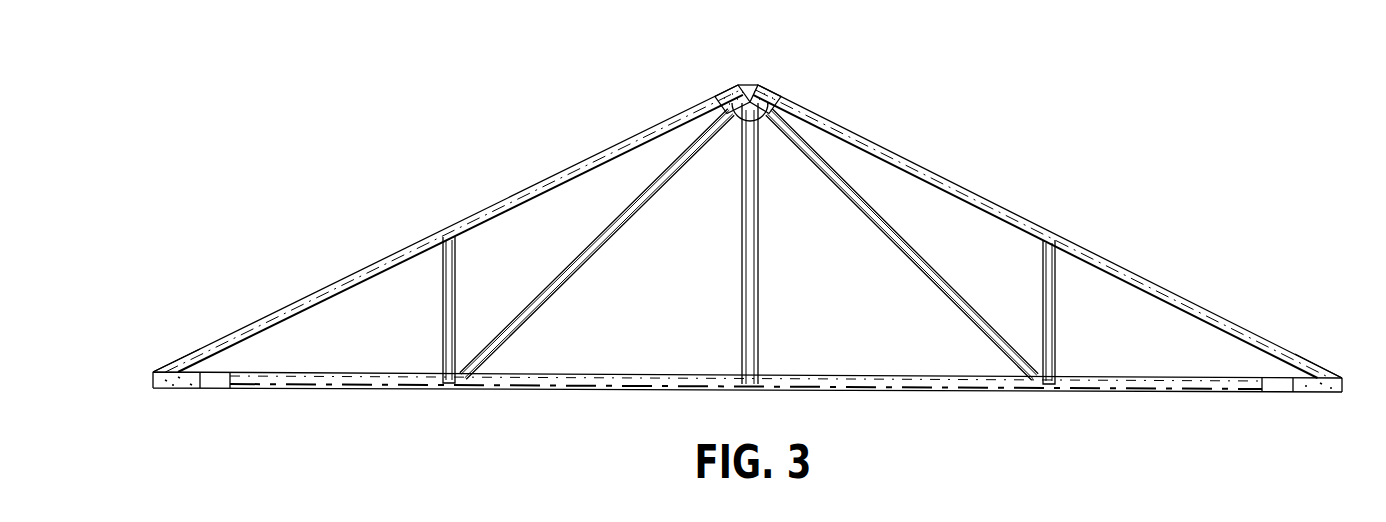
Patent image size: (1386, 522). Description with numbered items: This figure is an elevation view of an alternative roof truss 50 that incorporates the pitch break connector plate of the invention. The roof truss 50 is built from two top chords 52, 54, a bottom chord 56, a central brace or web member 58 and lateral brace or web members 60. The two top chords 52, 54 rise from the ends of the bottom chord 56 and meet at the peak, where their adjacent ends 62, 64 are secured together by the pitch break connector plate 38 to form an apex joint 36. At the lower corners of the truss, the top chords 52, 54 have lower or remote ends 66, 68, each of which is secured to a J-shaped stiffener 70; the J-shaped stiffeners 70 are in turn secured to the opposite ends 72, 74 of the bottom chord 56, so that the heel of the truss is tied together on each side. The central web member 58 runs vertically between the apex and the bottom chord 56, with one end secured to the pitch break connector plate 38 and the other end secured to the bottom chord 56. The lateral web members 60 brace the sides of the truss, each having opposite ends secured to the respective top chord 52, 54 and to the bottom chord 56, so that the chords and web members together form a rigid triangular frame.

The apex joint 36 is at (764, 72).
The pitch break connector plate 38 is at (735, 119).
The roof truss 50 is at (894, 127).
The top chord 52 is at (592, 172).
The top chord 54 is at (1003, 215).
The bottom chord 56 is at (886, 386).
The central web member 58 is at (758, 290).
The lateral web member 60 is at (450, 290).
The adjacent end 62 is at (731, 96).
The adjacent end 64 is at (775, 104).
The remote end 66 is at (178, 360).
The remote end 68 is at (1303, 358).
The J-shaped stiffener 70 is at (195, 385).
The end of bottom chord 72 is at (240, 393).
The end of bottom chord 74 is at (1262, 390).